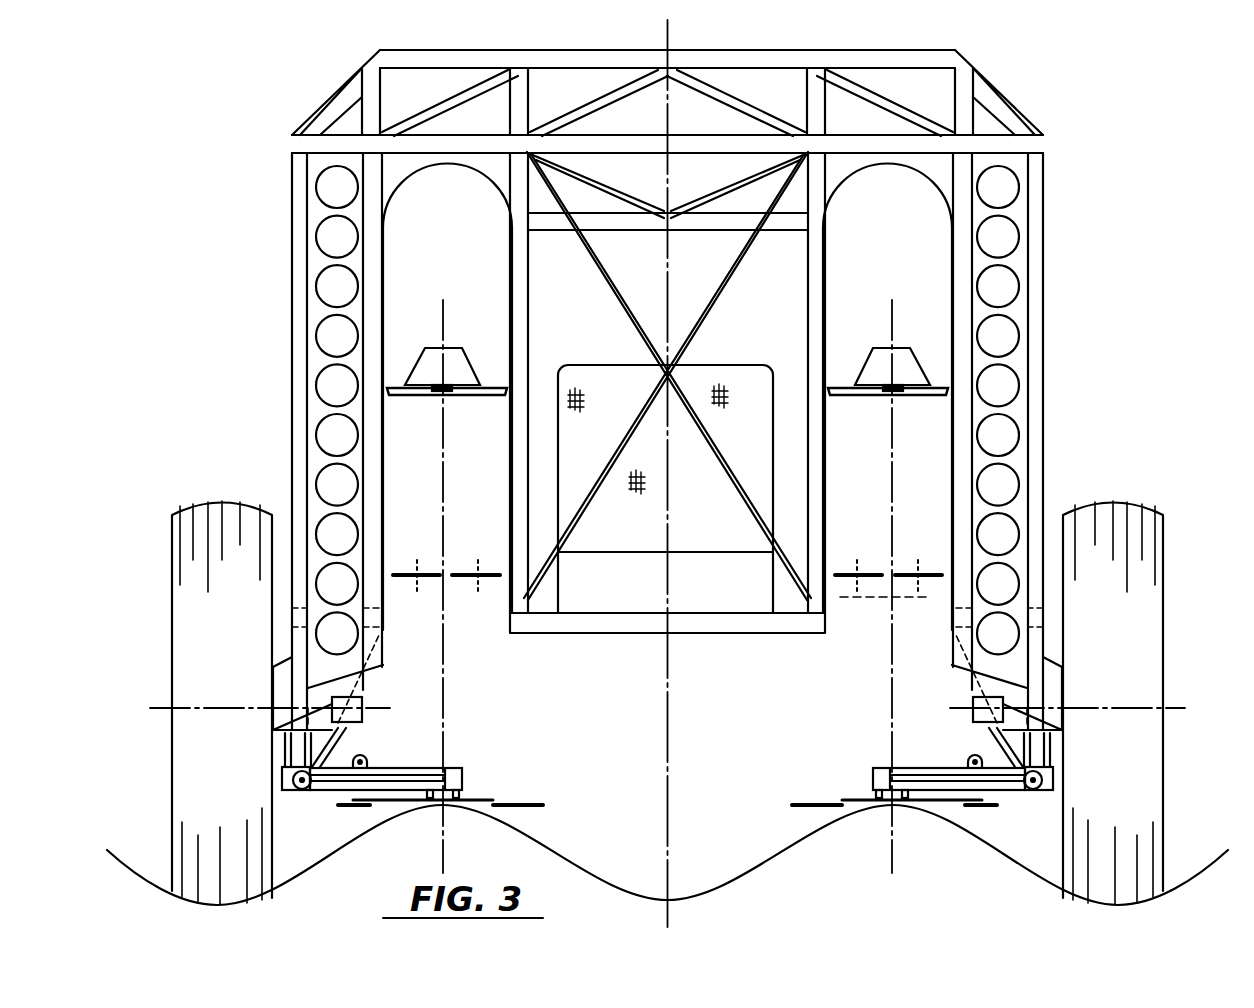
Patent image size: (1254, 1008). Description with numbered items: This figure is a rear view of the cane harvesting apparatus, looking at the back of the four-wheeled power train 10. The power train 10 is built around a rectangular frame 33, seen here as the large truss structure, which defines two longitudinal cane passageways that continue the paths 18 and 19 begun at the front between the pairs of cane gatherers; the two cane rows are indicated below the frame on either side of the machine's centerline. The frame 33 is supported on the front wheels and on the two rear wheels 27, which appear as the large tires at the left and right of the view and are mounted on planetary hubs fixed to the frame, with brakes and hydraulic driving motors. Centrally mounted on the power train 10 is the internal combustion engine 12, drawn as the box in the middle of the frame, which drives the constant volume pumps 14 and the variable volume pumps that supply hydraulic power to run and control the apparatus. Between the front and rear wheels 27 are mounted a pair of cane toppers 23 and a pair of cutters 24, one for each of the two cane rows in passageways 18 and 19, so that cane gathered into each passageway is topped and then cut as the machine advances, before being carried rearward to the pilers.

The power train 10 is at (1052, 352).
The internal combustion engine 12 is at (712, 365).
The constant volume pumps 14 is at (712, 607).
The path 18 is at (897, 565).
The path 19 is at (446, 570).
The cane toppers 23 is at (884, 348).
The cutters 24 is at (840, 798).
The rear wheels 27 is at (1176, 612).
The rectangular frame 33 is at (963, 53).